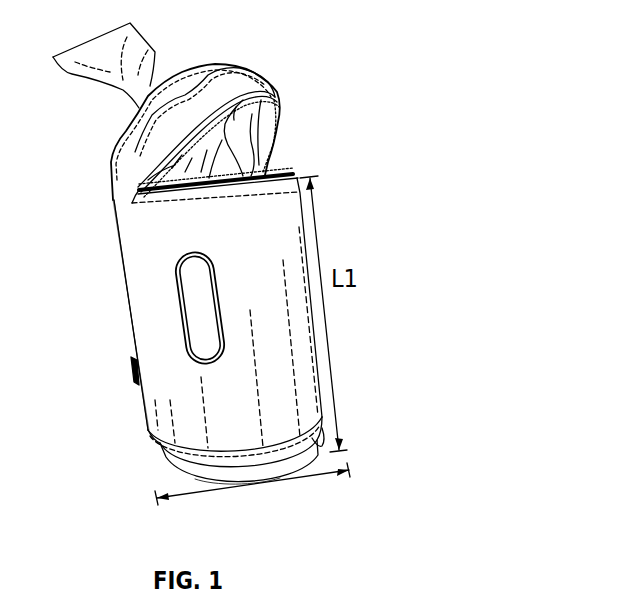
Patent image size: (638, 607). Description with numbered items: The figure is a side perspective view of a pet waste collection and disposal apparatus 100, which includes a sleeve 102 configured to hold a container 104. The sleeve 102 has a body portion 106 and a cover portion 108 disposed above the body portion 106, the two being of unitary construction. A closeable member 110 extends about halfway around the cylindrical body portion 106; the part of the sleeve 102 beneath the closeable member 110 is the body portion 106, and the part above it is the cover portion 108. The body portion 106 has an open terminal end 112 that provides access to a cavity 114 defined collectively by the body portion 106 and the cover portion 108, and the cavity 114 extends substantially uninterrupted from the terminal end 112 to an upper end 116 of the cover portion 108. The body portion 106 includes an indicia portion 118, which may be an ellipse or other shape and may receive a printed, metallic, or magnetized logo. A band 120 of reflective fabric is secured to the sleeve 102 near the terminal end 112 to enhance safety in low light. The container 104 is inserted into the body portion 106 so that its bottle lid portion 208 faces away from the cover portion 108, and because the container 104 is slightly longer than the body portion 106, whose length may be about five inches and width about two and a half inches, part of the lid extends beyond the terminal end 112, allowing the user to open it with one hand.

The pet waste collection and disposal apparatus 100 is at (393, 71).
The sleeve 102 is at (316, 338).
The container 104 is at (340, 474).
The body portion 106 is at (132, 317).
The cover portion 108 is at (244, 46).
The closeable member 110 is at (298, 173).
The terminal end 112 is at (152, 468).
The cavity 114 is at (270, 140).
The upper end 116 is at (160, 78).
The indicia portion 118 is at (187, 302).
The band 120 is at (149, 431).
The bottle lid portion 208 is at (213, 482).